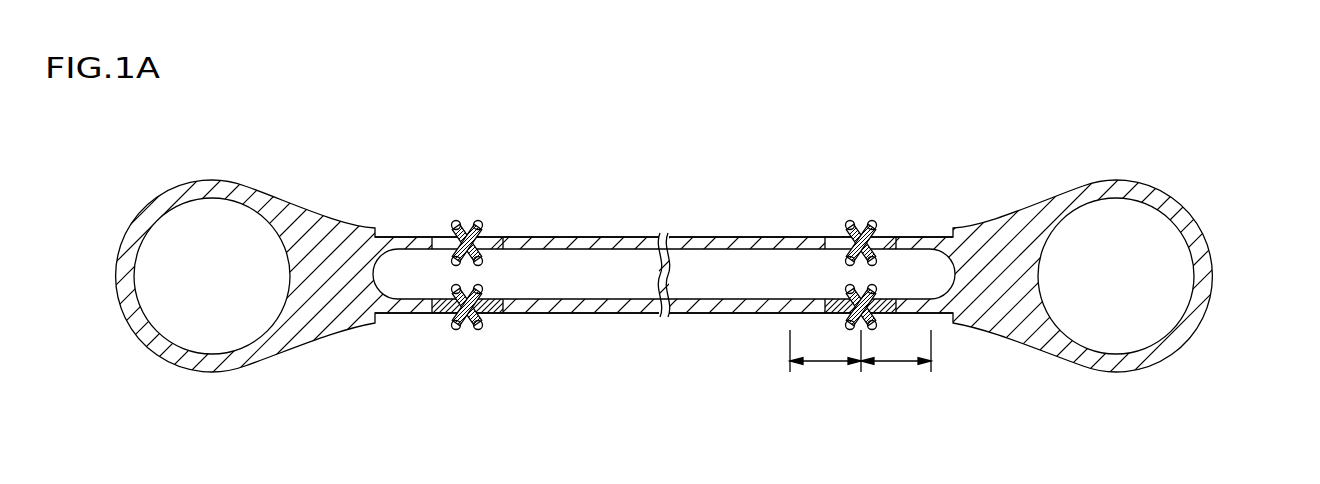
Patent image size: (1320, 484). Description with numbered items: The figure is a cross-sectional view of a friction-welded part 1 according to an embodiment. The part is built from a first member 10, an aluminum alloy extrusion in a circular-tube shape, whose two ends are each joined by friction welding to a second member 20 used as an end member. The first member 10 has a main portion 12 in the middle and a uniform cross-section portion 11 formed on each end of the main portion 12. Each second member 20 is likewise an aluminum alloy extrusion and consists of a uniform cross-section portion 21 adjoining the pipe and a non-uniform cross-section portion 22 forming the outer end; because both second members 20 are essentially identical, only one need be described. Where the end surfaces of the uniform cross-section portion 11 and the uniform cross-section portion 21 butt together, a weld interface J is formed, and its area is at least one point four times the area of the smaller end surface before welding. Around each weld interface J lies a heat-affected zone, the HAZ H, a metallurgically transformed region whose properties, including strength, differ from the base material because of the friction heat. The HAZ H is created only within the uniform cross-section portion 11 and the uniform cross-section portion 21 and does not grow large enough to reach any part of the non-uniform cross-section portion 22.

The friction-welded part 1 is at (440, 356).
The first member 10 is at (614, 220).
The uniform cross-section portion 11 is at (861, 164).
The main portion 12 is at (543, 150).
The second member 20 is at (156, 367).
The uniform cross-section portion 21 is at (931, 164).
The non-uniform cross-section portion 22 is at (1213, 164).
The HAZ H is at (882, 238).
The weld interface J is at (836, 226).